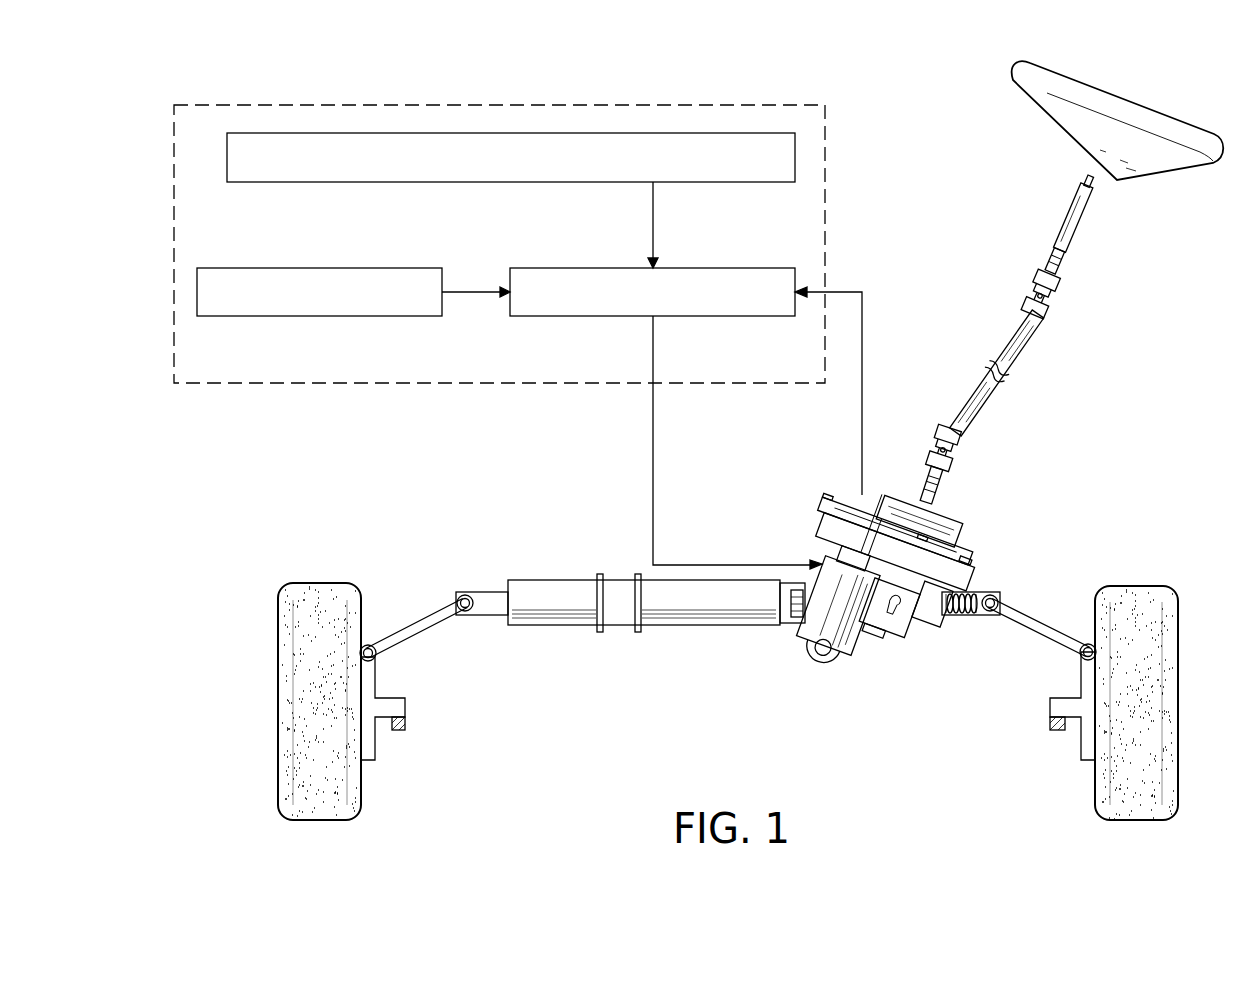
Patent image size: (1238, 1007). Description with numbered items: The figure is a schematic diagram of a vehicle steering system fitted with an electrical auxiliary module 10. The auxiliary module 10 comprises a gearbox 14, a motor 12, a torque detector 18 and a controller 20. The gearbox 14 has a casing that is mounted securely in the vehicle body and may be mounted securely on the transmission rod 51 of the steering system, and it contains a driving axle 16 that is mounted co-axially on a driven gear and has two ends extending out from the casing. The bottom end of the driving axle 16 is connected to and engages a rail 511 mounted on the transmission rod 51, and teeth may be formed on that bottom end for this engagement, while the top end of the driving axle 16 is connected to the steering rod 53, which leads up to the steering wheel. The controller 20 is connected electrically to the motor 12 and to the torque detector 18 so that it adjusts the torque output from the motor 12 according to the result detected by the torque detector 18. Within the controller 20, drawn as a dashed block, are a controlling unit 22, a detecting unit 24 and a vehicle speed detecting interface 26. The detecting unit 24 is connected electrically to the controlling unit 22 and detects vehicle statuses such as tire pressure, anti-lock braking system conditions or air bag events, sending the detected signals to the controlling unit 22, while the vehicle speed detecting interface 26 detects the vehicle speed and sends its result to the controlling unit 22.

The electrical auxiliary module 10 is at (890, 477).
The motor 12 is at (812, 638).
The gearbox 14 is at (989, 549).
The driving axle 16 is at (882, 652).
The torque detector 18 is at (942, 522).
The controller 20 is at (825, 218).
The controlling unit 22 is at (595, 318).
The detecting unit 24 is at (317, 318).
The vehicle speed detecting interface 26 is at (315, 182).
The transmission rod 51 is at (732, 637).
The rail 511 is at (965, 610).
The steering rod 53 is at (1010, 347).